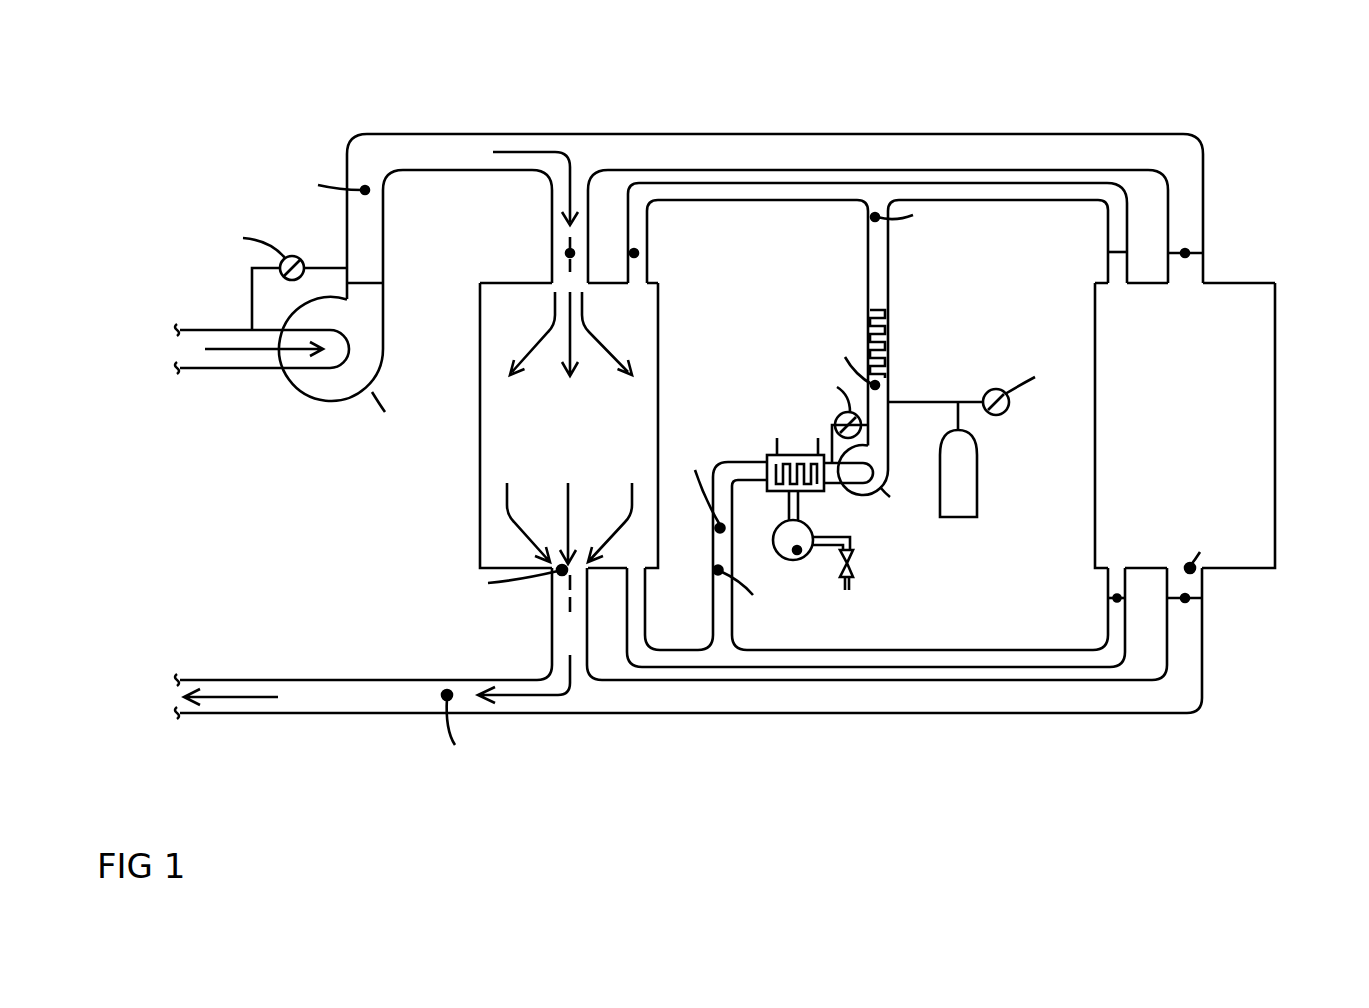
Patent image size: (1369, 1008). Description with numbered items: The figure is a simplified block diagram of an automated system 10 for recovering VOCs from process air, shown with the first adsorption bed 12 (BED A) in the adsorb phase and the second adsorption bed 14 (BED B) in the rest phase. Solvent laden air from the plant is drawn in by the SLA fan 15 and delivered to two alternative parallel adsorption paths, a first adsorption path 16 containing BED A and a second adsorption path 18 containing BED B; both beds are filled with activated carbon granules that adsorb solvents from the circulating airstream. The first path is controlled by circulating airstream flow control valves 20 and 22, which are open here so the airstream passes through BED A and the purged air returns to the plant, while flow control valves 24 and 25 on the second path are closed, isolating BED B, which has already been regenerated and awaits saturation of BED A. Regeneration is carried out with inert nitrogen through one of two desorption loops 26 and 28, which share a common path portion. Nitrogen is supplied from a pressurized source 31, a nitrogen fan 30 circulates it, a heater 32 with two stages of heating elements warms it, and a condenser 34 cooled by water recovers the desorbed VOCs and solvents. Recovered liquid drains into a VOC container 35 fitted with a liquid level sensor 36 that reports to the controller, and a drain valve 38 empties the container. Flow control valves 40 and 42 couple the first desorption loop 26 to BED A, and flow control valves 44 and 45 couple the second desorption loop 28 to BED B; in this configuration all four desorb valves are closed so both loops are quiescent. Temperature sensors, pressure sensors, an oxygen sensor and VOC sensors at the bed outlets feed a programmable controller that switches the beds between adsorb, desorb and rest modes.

The automated system 10 is at (1036, 106).
The adsorption bed 12 is at (660, 348).
The adsorption bed 14 is at (1275, 368).
The SLA fan 15 is at (385, 347).
The adsorption path 16 is at (552, 188).
The adsorption path 18 is at (1203, 197).
The flow control valve 20 is at (566, 253).
The flow control valve 22 is at (568, 600).
The flow control valve 24 is at (1185, 251).
The flow control valve 25 is at (1185, 600).
The desorption loop 26 is at (648, 273).
The desorption loop 28 is at (1108, 268).
The nitrogen fan 30 is at (888, 462).
The pressurized source of nitrogen 31 is at (970, 517).
The heater 32 is at (887, 342).
The condenser 34 is at (793, 455).
The VOC container 35 is at (774, 543).
The liquid level sensor 36 is at (797, 552).
The drain valve 38 is at (853, 565).
The flow control valve 40 is at (636, 252).
The flow control valve 42 is at (645, 590).
The flow control valve 44 is at (1116, 252).
The flow control valve 45 is at (1113, 598).